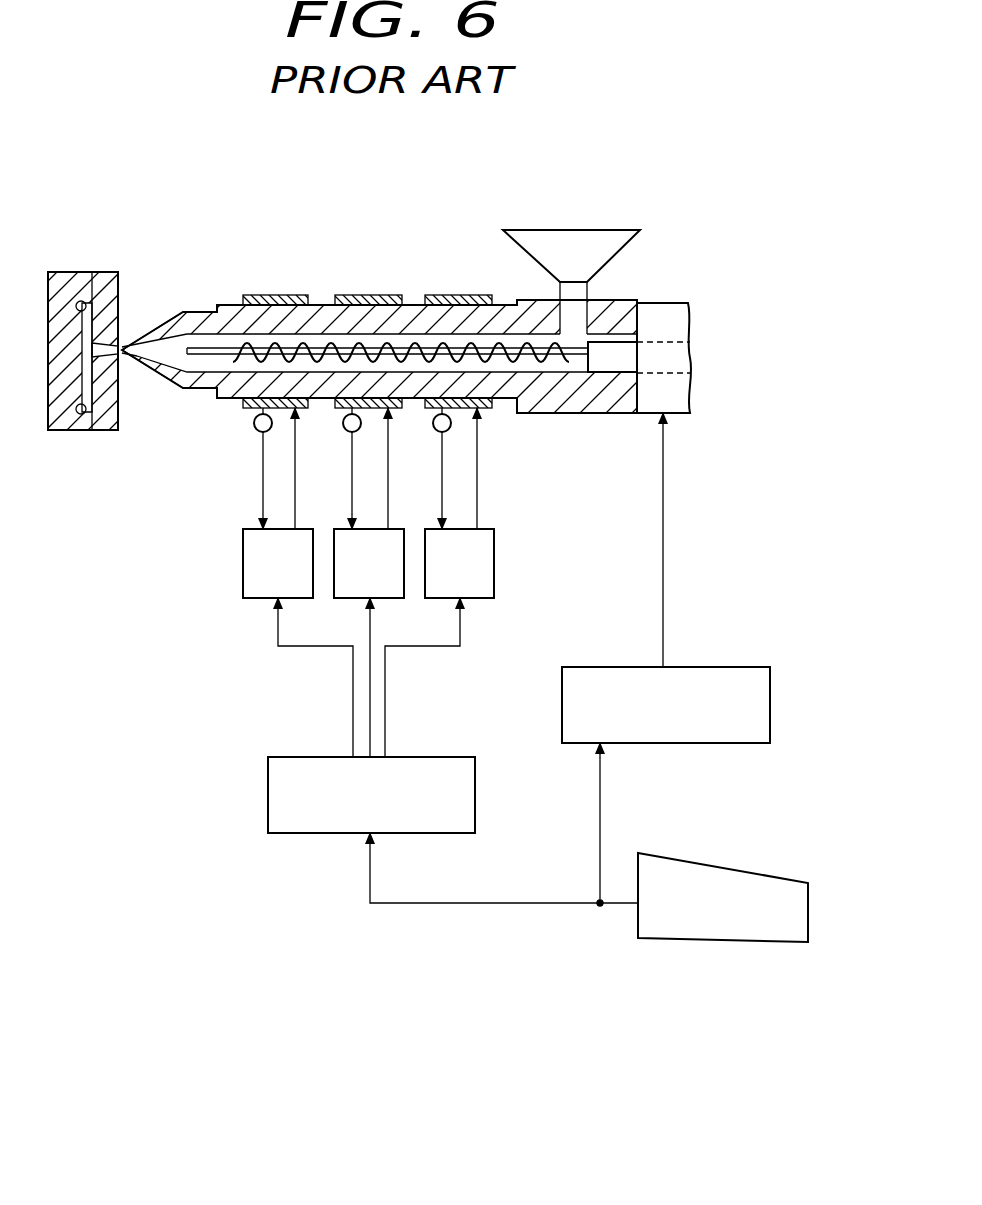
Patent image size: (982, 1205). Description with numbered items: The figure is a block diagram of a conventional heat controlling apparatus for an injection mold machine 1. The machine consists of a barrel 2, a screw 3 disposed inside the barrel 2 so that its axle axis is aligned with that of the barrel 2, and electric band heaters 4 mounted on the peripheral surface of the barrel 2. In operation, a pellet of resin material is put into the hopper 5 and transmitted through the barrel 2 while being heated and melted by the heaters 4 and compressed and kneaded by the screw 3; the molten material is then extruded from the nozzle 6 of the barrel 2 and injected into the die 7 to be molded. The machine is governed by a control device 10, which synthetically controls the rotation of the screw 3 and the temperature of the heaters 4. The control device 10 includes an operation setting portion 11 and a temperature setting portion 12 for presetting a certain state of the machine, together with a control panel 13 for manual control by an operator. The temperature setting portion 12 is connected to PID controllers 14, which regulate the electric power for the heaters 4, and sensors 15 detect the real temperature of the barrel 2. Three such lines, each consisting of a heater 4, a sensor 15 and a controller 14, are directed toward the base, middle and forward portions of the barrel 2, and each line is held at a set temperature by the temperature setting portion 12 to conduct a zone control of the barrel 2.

The injection mold machine 1 is at (227, 238).
The barrel 2 is at (507, 408).
The screw 3 is at (570, 360).
The electric band heater 4 is at (442, 296).
The hopper 5 is at (612, 250).
The nozzle 6 is at (150, 352).
The die 7 is at (78, 272).
The control device 10 is at (462, 937).
The operation setting portion 11 is at (628, 667).
The temperature setting portion 12 is at (302, 757).
The control panel 13 is at (718, 867).
The PID controller 14 is at (266, 600).
The sensor 15 is at (254, 424).